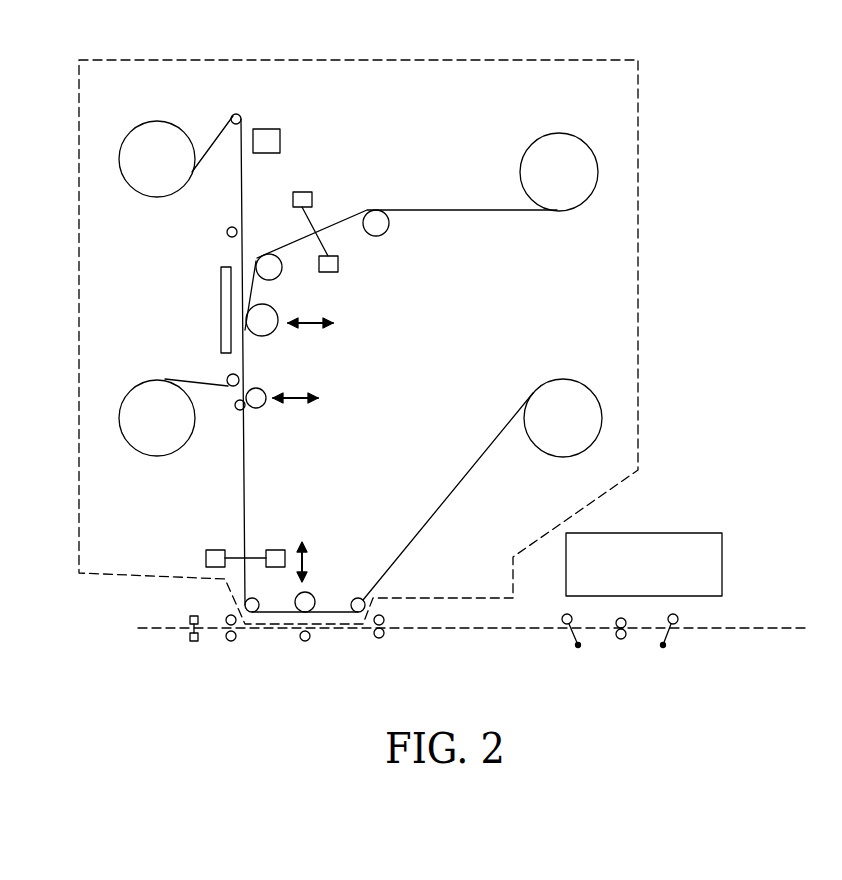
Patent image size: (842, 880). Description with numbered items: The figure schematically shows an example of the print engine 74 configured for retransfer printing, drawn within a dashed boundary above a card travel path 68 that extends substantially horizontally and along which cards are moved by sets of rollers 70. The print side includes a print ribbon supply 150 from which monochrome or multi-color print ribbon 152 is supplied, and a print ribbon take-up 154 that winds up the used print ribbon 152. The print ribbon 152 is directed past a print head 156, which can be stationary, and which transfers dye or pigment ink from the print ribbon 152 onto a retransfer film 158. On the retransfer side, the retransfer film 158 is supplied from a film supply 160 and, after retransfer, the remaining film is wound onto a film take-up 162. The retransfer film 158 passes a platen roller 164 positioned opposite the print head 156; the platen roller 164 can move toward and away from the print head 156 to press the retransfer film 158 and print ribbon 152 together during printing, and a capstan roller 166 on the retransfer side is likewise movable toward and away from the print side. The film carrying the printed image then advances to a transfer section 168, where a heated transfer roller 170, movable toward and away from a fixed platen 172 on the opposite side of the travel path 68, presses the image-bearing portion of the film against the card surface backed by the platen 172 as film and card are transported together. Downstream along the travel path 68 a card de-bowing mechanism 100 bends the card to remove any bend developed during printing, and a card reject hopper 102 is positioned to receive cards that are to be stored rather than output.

The print engine 74 is at (638, 166).
The card travel path 68 is at (752, 630).
The rollers 70 is at (232, 641).
The card de-bowing mechanism 100 is at (566, 626).
The card reject hopper 102 is at (723, 563).
The print ribbon supply 150 is at (158, 198).
The print ribbon 152 is at (217, 132).
The print ribbon take-up 154 is at (159, 379).
The print head 156 is at (220, 311).
The retransfer film 158 is at (453, 208).
The film supply 160 is at (560, 132).
The film take-up 162 is at (565, 378).
The platen roller 164 is at (276, 332).
The capstan roller 166 is at (263, 408).
The transfer section 168 is at (313, 559).
The heated transfer roller 170 is at (311, 592).
The platen 172 is at (305, 641).